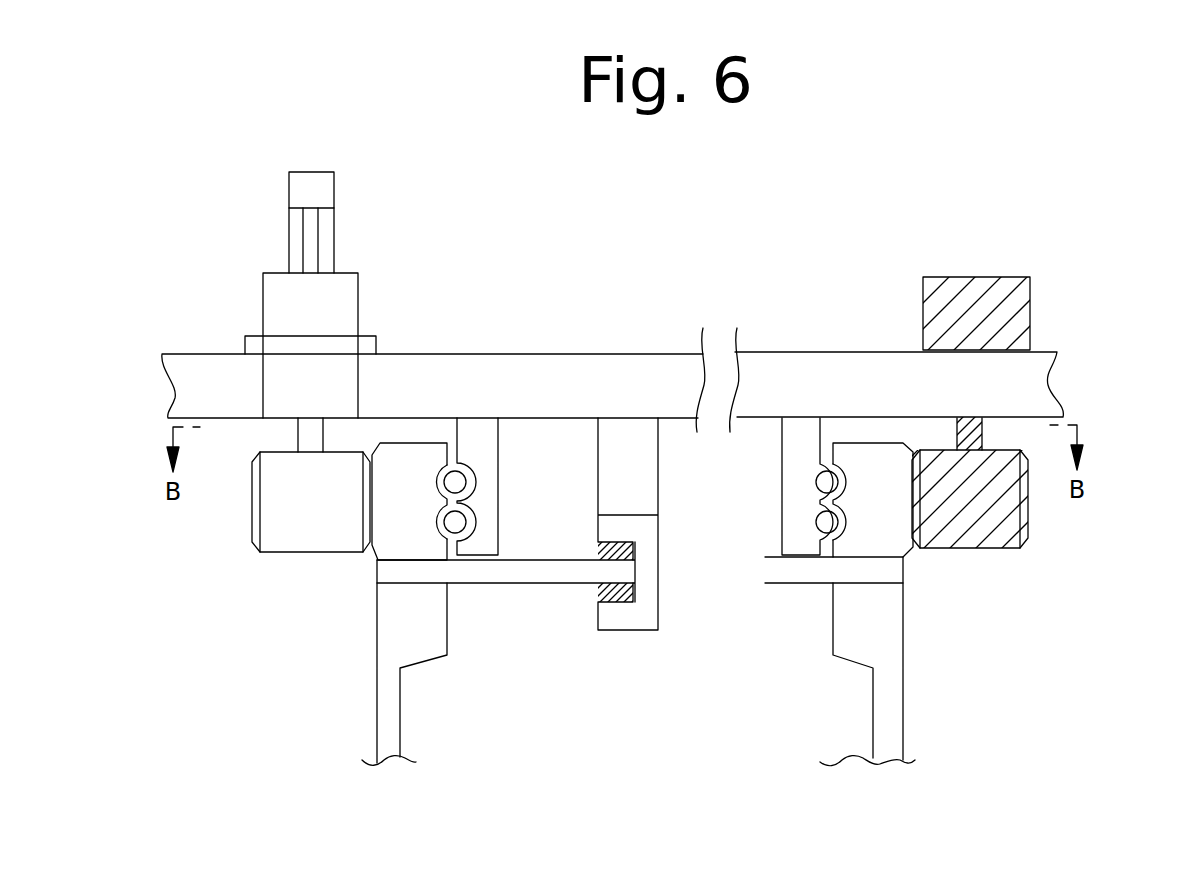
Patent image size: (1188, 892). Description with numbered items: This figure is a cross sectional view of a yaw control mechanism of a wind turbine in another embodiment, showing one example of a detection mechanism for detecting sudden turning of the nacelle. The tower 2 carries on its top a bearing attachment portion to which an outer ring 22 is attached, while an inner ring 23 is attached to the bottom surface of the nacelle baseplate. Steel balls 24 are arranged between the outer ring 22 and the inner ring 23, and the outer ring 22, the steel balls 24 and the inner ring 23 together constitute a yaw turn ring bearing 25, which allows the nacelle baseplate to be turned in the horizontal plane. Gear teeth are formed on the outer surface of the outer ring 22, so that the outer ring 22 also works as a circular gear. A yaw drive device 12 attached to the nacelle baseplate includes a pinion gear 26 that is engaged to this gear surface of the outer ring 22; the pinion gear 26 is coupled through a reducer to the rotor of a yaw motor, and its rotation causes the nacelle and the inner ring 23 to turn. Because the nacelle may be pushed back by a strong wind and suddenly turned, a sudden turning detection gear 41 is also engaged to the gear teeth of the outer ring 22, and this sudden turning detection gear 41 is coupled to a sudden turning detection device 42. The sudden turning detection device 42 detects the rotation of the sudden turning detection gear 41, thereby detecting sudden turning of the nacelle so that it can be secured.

The tower 2 is at (398, 705).
The yaw drive device 12 is at (369, 197).
The outer ring 22 is at (402, 453).
The inner ring 23 is at (496, 472).
The steel balls 24 is at (453, 478).
The yaw turn ring bearing 25 is at (642, 388).
The pinion gear 26 is at (313, 546).
The sudden turning detection gear 41 is at (992, 546).
The sudden turning detection device 42 is at (970, 277).